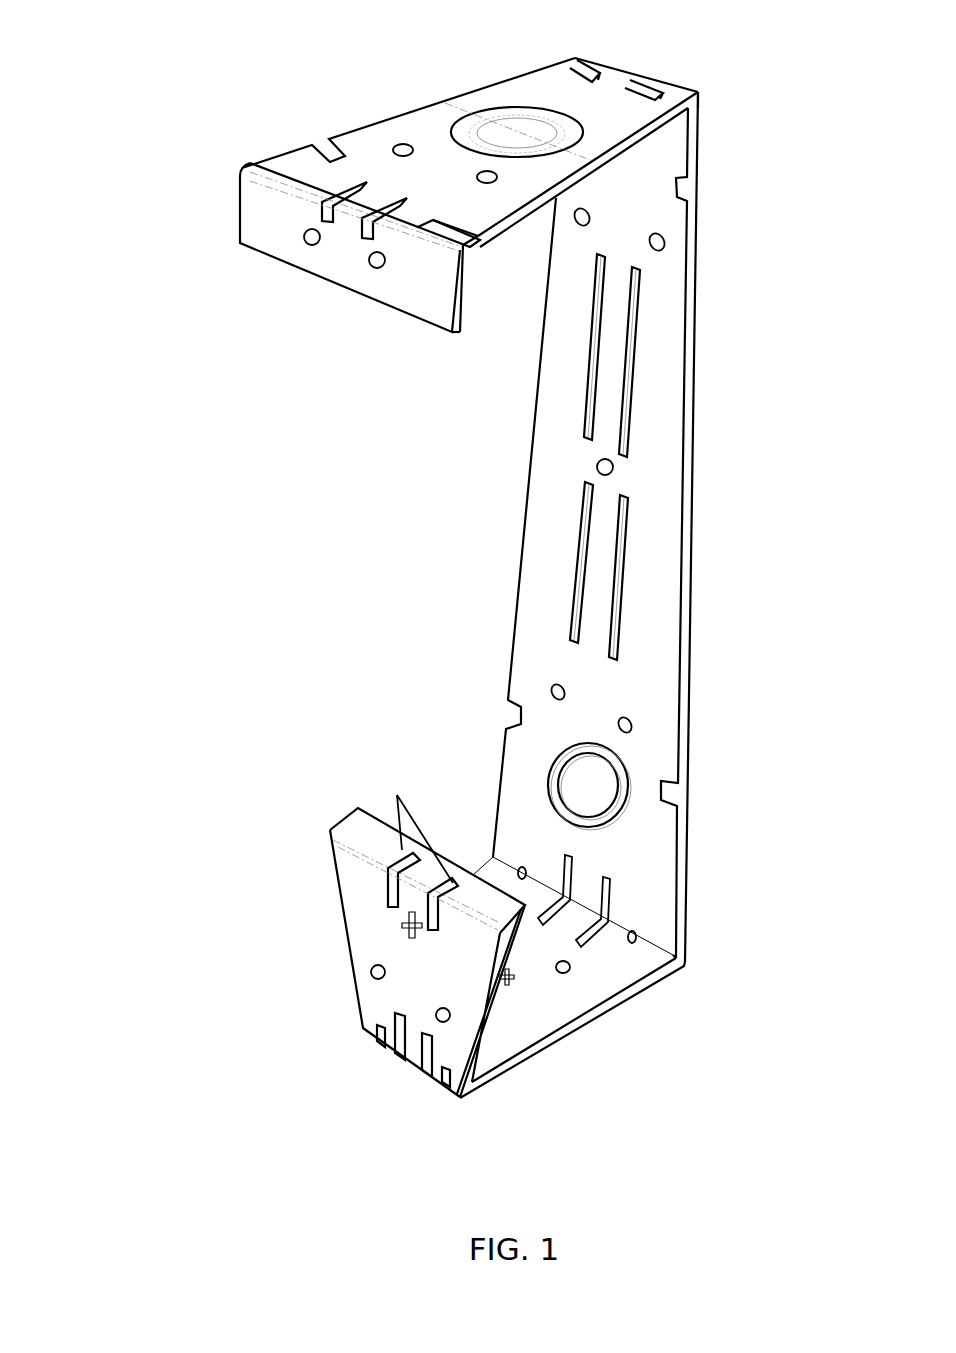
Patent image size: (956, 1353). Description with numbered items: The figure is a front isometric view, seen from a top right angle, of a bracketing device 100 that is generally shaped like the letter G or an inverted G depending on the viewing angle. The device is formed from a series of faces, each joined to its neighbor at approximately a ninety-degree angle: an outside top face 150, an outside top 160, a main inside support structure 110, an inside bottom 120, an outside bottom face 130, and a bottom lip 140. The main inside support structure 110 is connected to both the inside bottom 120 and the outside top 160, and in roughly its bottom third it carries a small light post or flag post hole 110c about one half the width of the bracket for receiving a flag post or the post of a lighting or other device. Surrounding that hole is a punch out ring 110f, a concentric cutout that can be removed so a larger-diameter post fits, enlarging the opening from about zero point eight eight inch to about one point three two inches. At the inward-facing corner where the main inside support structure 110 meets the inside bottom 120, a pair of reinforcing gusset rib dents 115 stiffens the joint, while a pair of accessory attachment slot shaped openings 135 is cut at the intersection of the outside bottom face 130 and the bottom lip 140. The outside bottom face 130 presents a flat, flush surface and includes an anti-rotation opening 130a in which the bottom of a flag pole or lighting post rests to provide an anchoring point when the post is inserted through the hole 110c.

The bracketing device 100 is at (445, 577).
The main inside support structure 110 is at (657, 388).
The light post or flag post hole 110c is at (587, 782).
The punch out ring 110f is at (588, 757).
The reinforcing gusset rib dents 115 is at (634, 934).
The inside bottom 120 is at (553, 993).
The outside bottom face 130 is at (420, 980).
The anti-rotation opening 130a is at (413, 930).
The accessory attachment slot shaped openings 135 is at (397, 795).
The bottom lip 140 is at (362, 832).
The outside top face 150 is at (277, 228).
The outside top 160 is at (563, 95).